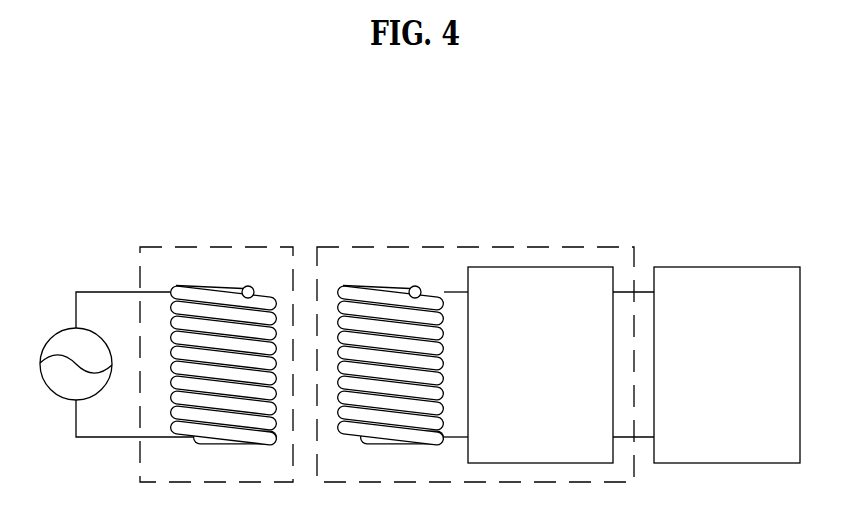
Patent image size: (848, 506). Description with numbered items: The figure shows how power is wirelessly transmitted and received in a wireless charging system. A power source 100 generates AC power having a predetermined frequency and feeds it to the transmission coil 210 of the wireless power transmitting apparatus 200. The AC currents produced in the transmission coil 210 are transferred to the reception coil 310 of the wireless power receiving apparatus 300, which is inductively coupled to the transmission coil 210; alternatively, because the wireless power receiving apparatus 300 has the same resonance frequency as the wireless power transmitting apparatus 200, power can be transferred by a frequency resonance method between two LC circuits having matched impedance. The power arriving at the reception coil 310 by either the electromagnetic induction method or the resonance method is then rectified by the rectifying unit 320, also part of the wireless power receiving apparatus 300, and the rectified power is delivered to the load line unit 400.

The power source 100 is at (53, 336).
The wireless power transmitting apparatus 200 is at (152, 246).
The transmission coil 210 is at (230, 302).
The wireless power receiving apparatus 300 is at (325, 246).
The reception coil 310 is at (390, 302).
The rectifying unit 320 is at (545, 266).
The load line unit 400 is at (772, 266).